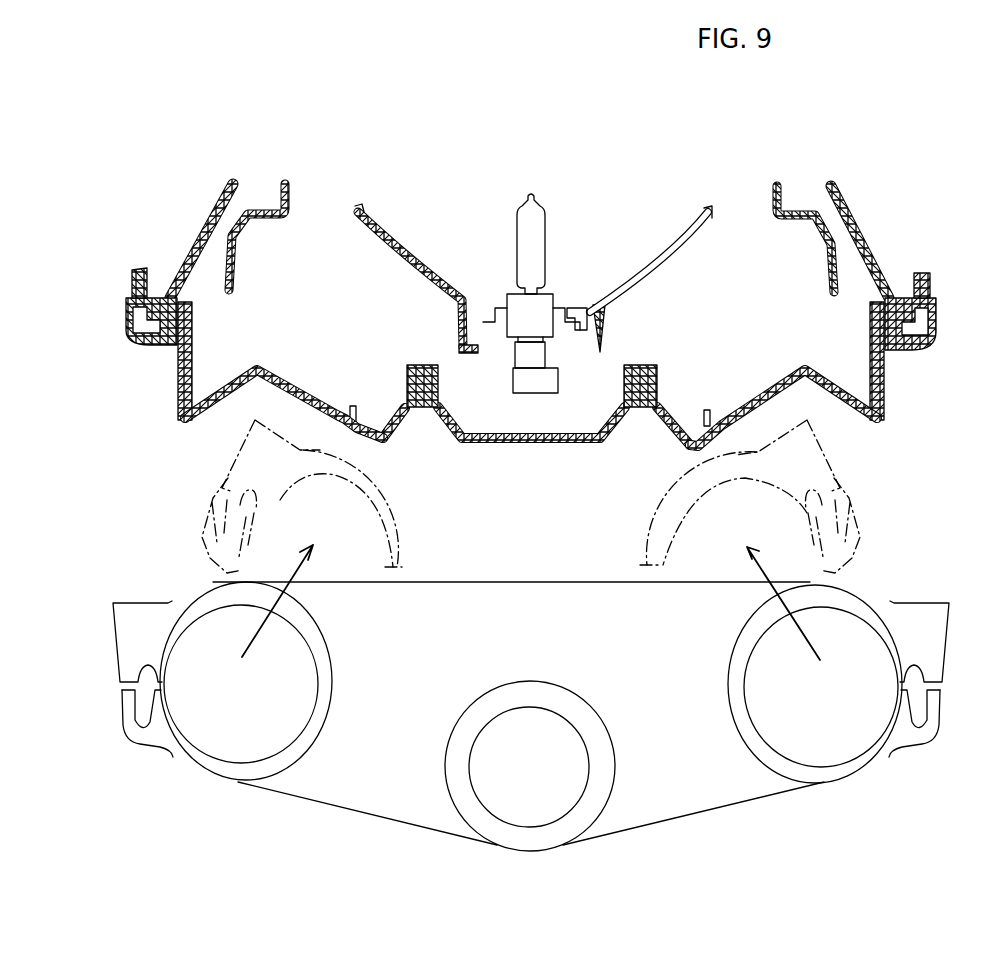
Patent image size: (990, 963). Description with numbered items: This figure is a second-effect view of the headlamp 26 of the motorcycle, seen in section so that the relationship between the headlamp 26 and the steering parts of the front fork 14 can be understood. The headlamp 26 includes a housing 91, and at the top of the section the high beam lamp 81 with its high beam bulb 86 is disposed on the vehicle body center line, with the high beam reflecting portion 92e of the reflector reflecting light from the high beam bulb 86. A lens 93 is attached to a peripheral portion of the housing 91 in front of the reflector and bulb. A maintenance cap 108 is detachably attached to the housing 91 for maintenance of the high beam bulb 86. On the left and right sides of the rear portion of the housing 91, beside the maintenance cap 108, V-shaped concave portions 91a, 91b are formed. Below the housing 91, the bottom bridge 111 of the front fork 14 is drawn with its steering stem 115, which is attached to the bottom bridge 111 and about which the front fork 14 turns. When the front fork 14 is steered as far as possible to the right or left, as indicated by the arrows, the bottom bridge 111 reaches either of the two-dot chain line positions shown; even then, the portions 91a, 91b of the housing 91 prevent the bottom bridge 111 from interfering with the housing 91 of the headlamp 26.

The front fork 14 is at (164, 766).
The headlamp 26 is at (180, 249).
The high beam lamp 81 is at (620, 201).
The high beam bulb 86 is at (522, 238).
The housing 91 is at (172, 397).
The V-shaped concave portion 91a is at (253, 380).
The V-shaped concave portion 91b is at (828, 382).
The high beam reflecting portion 92e is at (402, 250).
The lens 93 is at (860, 237).
The maintenance cap 108 is at (470, 432).
The bottom bridge 111 is at (862, 540).
The steering stem 115 is at (563, 797).